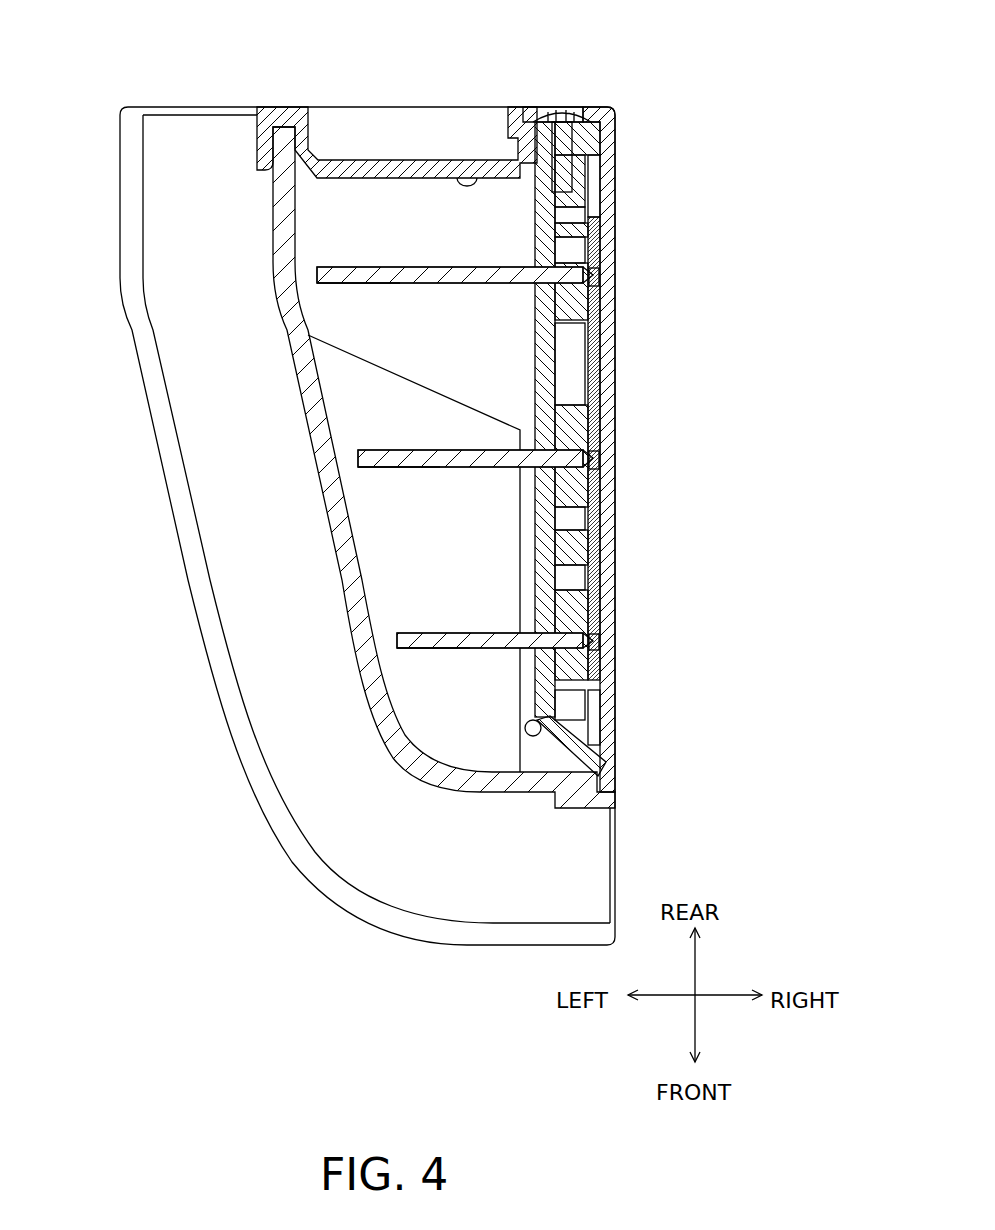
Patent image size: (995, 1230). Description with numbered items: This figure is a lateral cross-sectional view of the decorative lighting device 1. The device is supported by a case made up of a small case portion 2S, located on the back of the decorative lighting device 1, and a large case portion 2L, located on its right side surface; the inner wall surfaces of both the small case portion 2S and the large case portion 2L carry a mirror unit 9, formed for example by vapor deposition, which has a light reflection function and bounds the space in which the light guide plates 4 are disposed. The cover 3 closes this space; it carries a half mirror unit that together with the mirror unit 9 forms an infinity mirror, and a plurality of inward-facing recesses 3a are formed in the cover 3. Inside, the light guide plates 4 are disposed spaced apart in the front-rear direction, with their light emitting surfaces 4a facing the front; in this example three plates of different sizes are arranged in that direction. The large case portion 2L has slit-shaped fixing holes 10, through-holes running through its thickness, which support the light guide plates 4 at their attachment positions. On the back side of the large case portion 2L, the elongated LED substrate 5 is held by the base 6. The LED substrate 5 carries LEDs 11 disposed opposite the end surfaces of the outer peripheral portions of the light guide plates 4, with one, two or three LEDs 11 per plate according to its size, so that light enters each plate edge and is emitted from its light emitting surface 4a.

The decorative lighting device 1 is at (390, 490).
The small case portion 2S is at (407, 162).
The large case portion 2L is at (545, 552).
The cover 3 is at (265, 730).
The inward-facing recess 3a is at (412, 757).
The light guide plate 4 is at (462, 267).
The light emitting surface 4a is at (377, 285).
The LED substrate 5 is at (600, 368).
The base 6 is at (603, 500).
The mirror unit 9 is at (462, 178).
The fixing hole 10 is at (590, 275).
The LED 11 is at (592, 285).